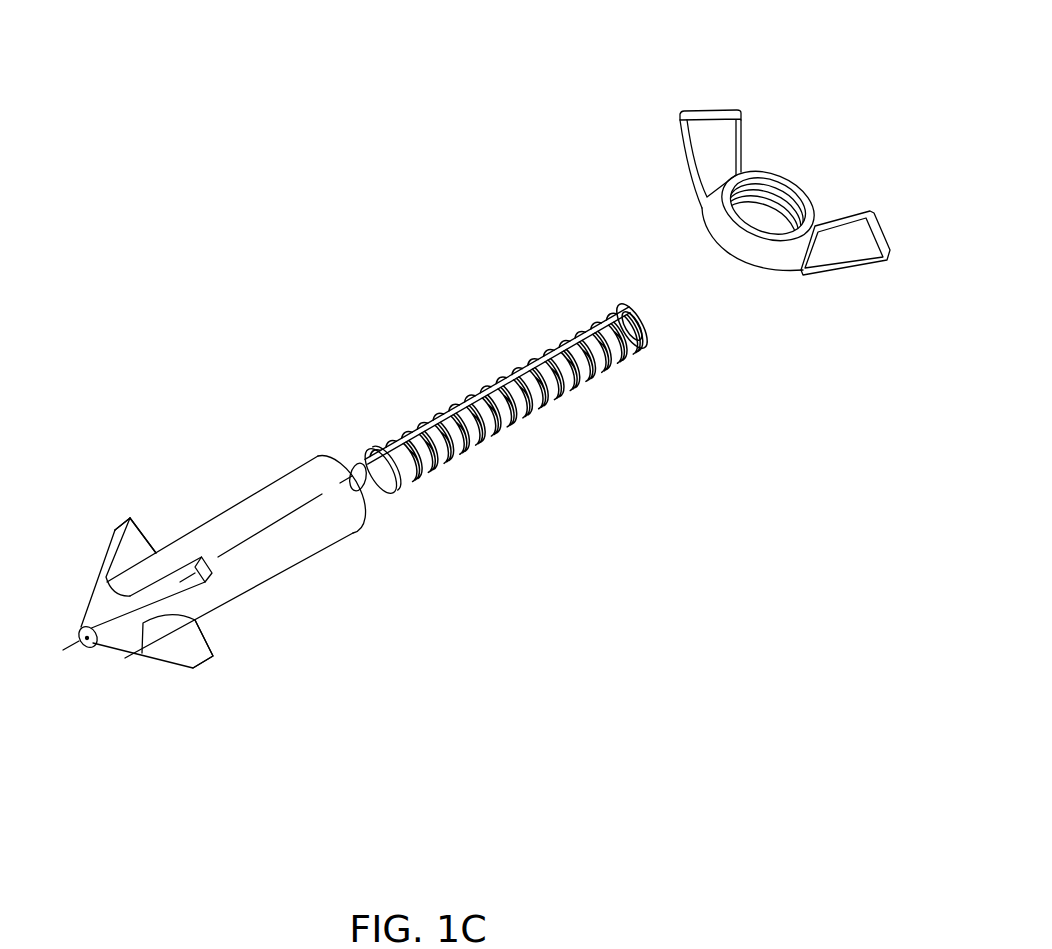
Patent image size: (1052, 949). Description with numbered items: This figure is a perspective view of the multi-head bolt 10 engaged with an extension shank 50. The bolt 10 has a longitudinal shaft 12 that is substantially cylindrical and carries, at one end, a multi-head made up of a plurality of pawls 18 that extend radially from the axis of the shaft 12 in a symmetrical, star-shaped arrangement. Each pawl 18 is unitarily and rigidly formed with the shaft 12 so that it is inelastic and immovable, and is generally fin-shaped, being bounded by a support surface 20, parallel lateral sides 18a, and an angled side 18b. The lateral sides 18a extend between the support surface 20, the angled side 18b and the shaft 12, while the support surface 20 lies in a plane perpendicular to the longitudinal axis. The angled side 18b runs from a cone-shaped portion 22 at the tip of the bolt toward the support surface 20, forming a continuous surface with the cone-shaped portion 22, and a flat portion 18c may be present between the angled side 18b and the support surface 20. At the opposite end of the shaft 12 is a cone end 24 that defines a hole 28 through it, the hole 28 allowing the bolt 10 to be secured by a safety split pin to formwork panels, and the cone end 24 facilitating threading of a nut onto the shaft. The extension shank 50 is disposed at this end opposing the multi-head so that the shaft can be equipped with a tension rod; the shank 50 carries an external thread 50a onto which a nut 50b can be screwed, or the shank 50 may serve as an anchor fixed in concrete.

The multi-head bolt 10 is at (406, 592).
The longitudinal shaft 12 is at (263, 566).
The pawls 18 is at (142, 565).
The lateral sides 18a is at (145, 553).
The angled side 18b is at (103, 573).
The flat portion 18c is at (118, 522).
The support surface 20 is at (138, 515).
The cone-shaped portion 22 is at (110, 640).
The cone end 24 is at (375, 492).
The hole 28 is at (355, 452).
The extension shank 50 is at (473, 378).
The external thread 50a is at (550, 338).
The nut 50b is at (707, 140).